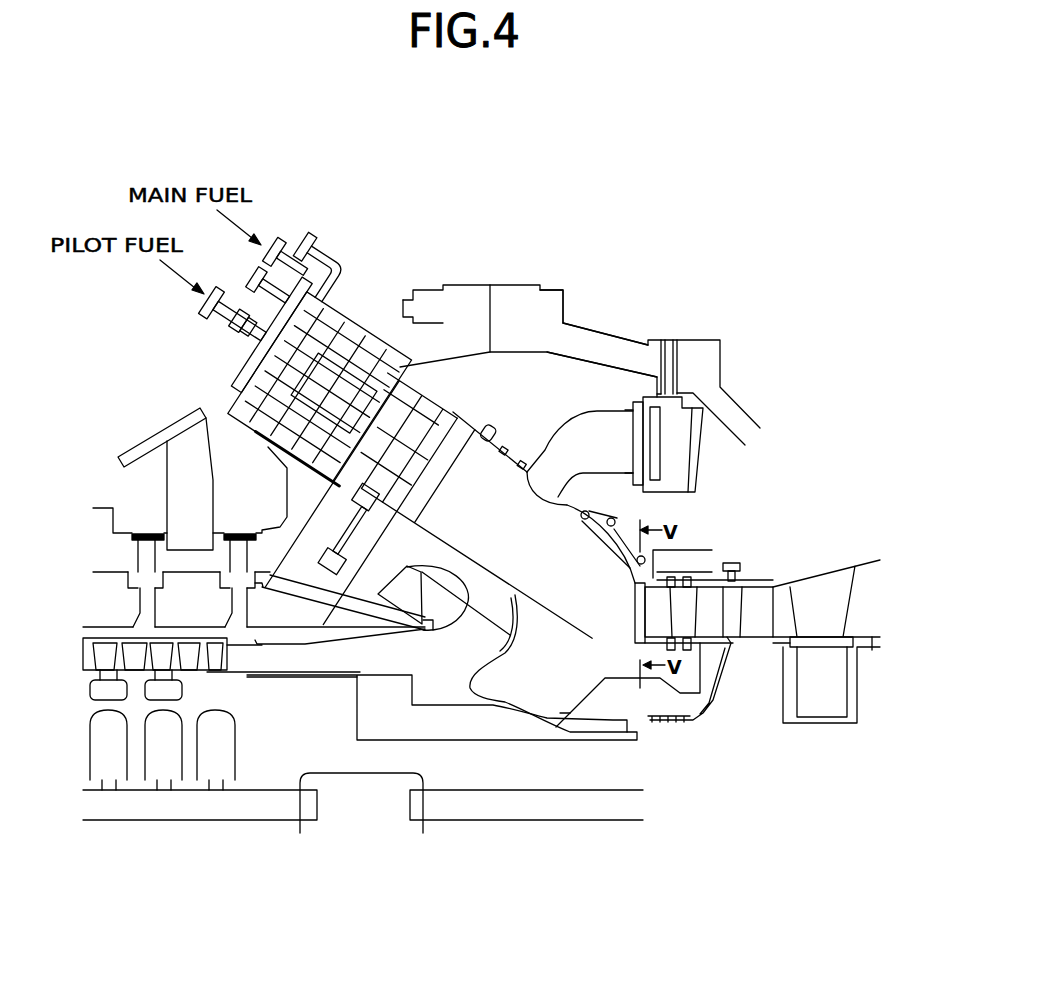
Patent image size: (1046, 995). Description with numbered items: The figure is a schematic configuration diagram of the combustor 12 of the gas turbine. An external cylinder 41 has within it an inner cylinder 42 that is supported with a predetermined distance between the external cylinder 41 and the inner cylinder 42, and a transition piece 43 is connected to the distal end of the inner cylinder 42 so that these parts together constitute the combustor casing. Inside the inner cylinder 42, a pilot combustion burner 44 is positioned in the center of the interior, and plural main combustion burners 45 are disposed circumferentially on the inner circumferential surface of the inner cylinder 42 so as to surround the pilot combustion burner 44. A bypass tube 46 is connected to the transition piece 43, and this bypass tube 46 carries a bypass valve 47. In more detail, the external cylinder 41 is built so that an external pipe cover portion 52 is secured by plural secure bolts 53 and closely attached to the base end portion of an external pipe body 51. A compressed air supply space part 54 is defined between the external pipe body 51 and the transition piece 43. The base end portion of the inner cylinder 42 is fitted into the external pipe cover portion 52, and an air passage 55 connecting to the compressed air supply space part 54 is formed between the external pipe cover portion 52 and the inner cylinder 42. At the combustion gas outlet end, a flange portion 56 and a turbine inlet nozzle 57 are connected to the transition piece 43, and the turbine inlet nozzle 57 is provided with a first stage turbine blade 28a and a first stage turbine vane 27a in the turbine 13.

The combustor 12 is at (531, 187).
The turbine 13 is at (866, 540).
The first stage turbine vane 27a is at (817, 597).
The first stage turbine blade 28a is at (757, 607).
The external cylinder 41 is at (237, 397).
The inner cylinder 42 is at (370, 410).
The transition piece 43 is at (481, 450).
The pilot combustion burner 44 is at (330, 417).
The main combustion burner 45 is at (330, 330).
The bypass tube 46 is at (567, 484).
The bypass valve 47 is at (653, 462).
The external pipe body 51 is at (633, 352).
The external pipe cover portion 52 is at (473, 285).
The secure bolt 53 is at (553, 297).
The compressed air supply space part 54 is at (598, 367).
The air passage 55 is at (410, 367).
The flange portion 56 is at (637, 613).
The turbine inlet nozzle 57 is at (660, 617).